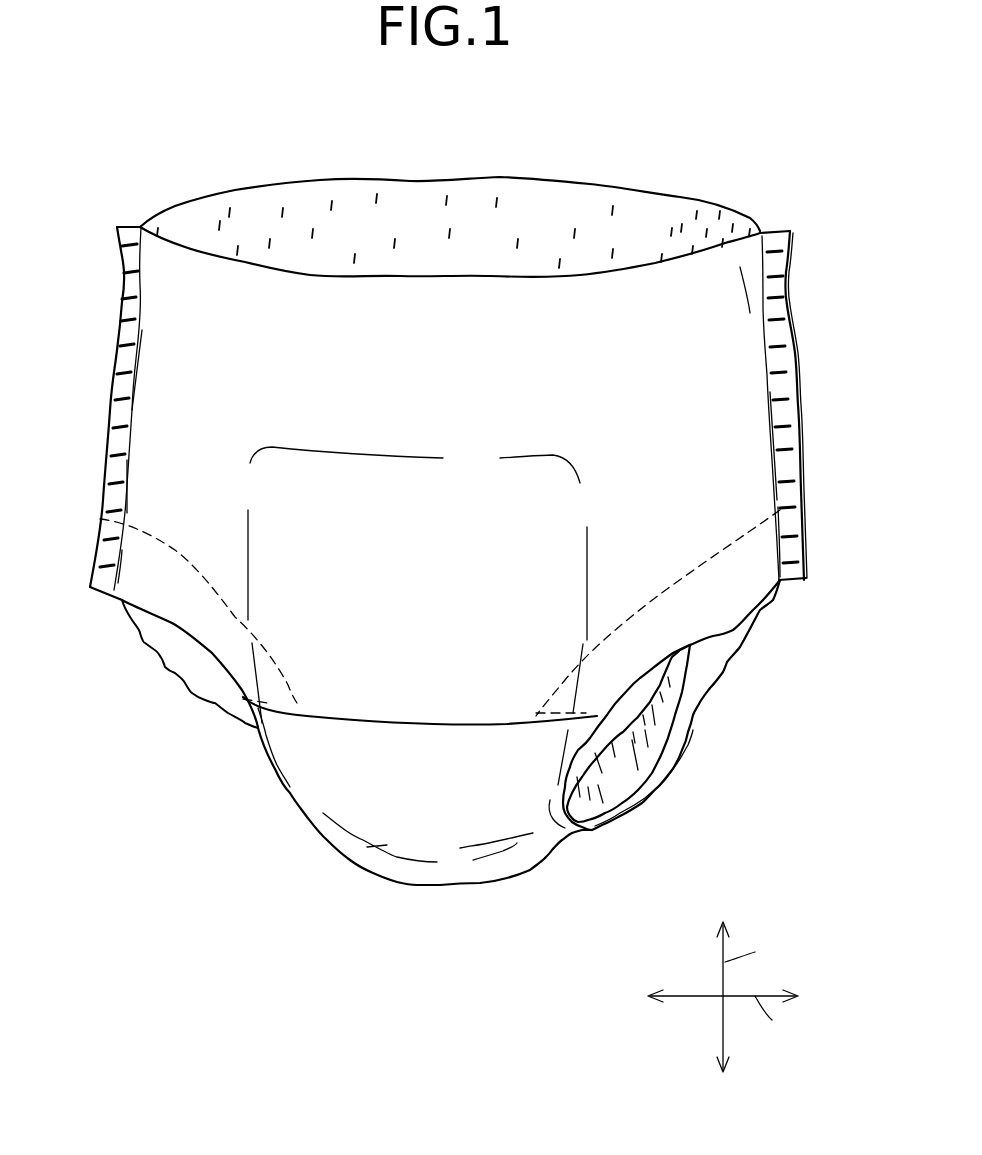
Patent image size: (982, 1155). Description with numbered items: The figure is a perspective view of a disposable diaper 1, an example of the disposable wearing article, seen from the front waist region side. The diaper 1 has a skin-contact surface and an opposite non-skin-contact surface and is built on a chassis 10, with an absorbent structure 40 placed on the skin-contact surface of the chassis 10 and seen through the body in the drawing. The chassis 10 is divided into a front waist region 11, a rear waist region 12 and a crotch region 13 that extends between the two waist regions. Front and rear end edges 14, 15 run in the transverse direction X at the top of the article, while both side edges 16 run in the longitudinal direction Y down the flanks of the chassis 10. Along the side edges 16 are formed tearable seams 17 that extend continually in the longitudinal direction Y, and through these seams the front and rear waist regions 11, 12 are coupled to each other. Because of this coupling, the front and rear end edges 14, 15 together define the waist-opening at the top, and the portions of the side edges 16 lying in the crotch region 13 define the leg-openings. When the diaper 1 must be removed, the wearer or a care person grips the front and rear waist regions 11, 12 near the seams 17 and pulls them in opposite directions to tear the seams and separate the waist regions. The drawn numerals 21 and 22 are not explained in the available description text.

The disposable diaper 1 is at (678, 152).
The chassis 10 is at (772, 217).
The front waist region 11 is at (722, 412).
The rear waist region 12 is at (567, 207).
The crotch region 13 is at (457, 863).
The front end edge 14 is at (468, 275).
The rear end edge 15 is at (512, 180).
The side edges 16 is at (117, 357).
The tearable seams 17 is at (780, 450).
The leg elastic member 21 is at (213, 548).
The waistband 22 is at (408, 217).
The absorbent structure 40 is at (372, 668).